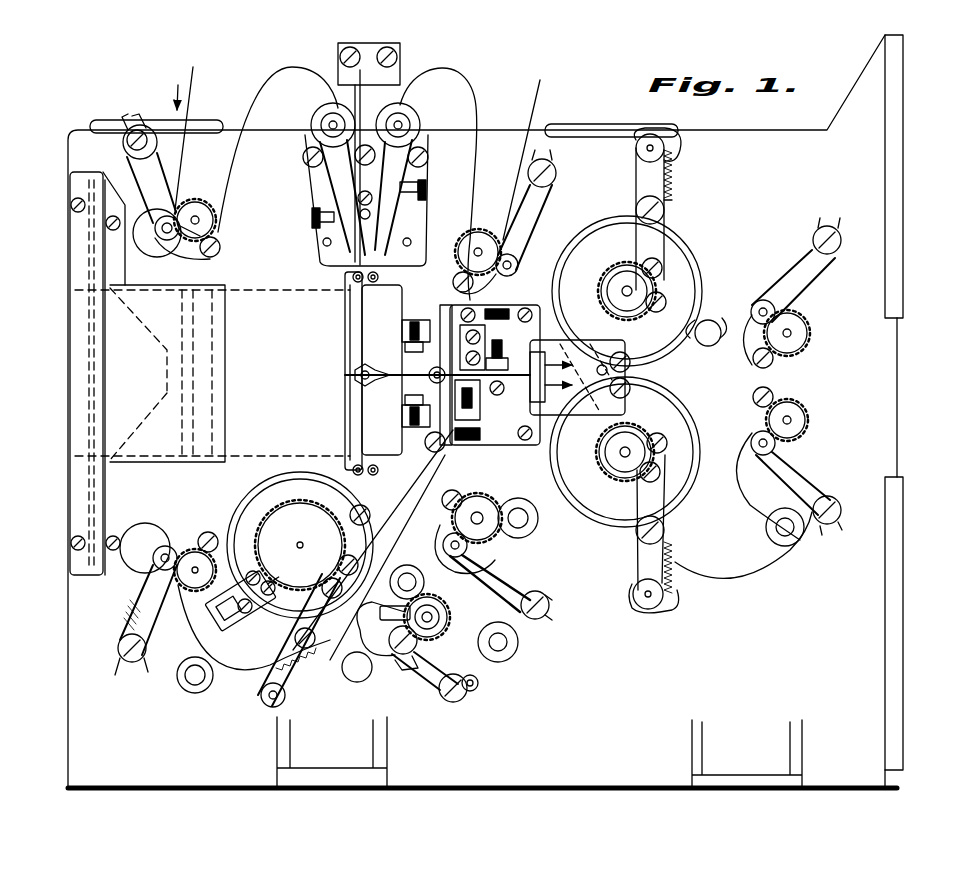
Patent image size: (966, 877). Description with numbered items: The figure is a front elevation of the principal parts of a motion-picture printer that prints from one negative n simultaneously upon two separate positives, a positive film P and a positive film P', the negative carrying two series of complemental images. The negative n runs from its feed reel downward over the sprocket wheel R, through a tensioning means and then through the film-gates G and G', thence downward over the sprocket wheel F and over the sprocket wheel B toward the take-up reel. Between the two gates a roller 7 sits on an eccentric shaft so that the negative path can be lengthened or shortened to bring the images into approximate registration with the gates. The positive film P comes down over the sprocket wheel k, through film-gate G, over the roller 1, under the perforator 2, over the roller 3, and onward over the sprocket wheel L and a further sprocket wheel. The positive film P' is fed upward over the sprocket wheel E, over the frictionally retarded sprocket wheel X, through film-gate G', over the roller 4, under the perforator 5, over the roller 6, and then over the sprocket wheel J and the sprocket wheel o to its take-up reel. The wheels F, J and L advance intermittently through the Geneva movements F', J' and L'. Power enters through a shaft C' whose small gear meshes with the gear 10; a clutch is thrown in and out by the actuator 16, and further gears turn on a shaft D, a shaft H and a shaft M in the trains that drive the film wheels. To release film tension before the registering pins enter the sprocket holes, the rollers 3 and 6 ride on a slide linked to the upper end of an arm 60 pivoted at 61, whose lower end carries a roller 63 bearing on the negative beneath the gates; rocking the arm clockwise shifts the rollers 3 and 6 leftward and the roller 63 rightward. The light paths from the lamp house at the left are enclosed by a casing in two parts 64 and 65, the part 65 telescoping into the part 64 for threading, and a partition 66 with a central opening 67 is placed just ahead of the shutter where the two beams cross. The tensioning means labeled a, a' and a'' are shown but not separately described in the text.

The roller 1 is at (372, 362).
The perforator 2 is at (502, 318).
The roller 3 is at (628, 368).
The roller 4 is at (380, 395).
The perforator 5 is at (490, 416).
The roller 6 is at (457, 470).
The roller 7 is at (358, 372).
The gear 10 is at (360, 37).
The actuator 16 is at (355, 680).
The arm 60 is at (387, 557).
The pivot 61 is at (445, 452).
The roller 63 is at (372, 517).
The casing part 64 is at (170, 455).
The casing part 65 is at (250, 445).
The partition 66 is at (158, 335).
The central opening 67 is at (165, 372).
The left feed arm a is at (323, 166).
The right feed arm a' is at (391, 184).
The lower link arm a'' is at (417, 659).
The sprocket wheel B is at (196, 583).
The shaft C' is at (502, 661).
The shaft D is at (520, 510).
The sprocket wheel E is at (485, 532).
The sprocket wheel F is at (300, 535).
The Geneva movement F' is at (286, 545).
The film-gate G is at (336, 373).
The film-gate G' is at (322, 372).
The shaft H is at (200, 680).
The sprocket wheel J is at (611, 484).
The Geneva movement J' is at (639, 452).
The sprocket wheel k is at (482, 240).
The sprocket wheel L is at (595, 279).
The Geneva movement L' is at (645, 291).
The shaft M is at (707, 340).
The negative n is at (193, 67).
The sprocket wheel o is at (800, 432).
The positive film p is at (538, 118).
The positive film P is at (814, 404).
The positive film P' is at (744, 573).
The sprocket wheel R is at (208, 226).
The sprocket wheel X is at (447, 617).